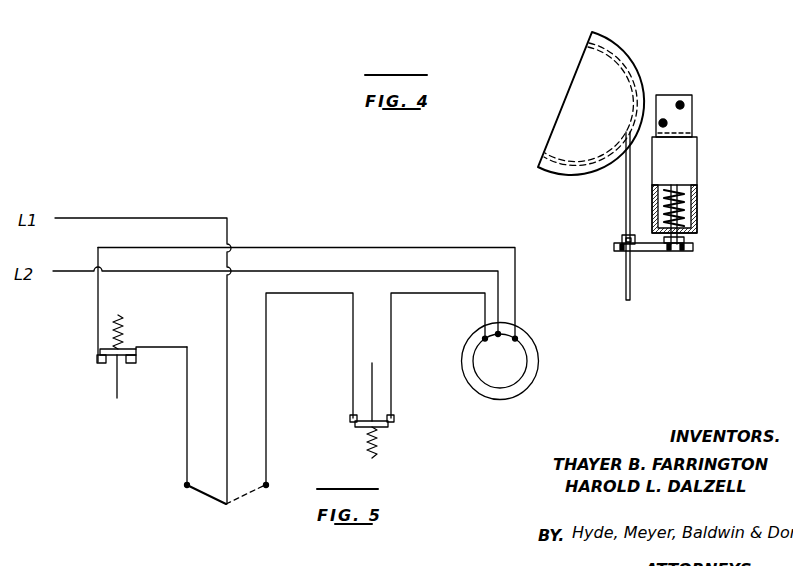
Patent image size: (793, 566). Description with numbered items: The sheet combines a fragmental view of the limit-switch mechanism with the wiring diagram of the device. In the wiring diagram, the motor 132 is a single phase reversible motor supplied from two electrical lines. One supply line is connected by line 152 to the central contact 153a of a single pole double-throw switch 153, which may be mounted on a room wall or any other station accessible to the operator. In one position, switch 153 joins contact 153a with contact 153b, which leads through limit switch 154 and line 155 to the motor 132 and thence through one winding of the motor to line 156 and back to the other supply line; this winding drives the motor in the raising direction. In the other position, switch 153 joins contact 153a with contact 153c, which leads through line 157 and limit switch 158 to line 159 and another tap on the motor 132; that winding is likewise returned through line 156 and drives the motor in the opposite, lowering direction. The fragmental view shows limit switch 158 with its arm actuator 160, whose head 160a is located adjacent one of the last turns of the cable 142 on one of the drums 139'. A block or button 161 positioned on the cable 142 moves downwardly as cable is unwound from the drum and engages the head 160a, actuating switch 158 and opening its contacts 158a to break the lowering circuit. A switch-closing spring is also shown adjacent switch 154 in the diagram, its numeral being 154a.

In FIG. 4, the drum 139' is at (591, 118).
In FIG. 4, the cable 142 is at (626, 218).
In FIG. 4, the limit switch 158 is at (697, 185).
In FIG. 5, the limit switch 158 is at (392, 423).
In FIG. 4, the arm actuator 160 is at (686, 254).
In FIG. 4, the head 160a is at (620, 254).
In FIG. 4, the block or button 161 is at (620, 243).
In FIG. 5, the line 152 is at (162, 212).
In FIG. 5, the line 155 is at (352, 235).
In FIG. 5, the line 156 is at (442, 271).
In FIG. 5, the line 157 is at (323, 298).
In FIG. 5, the line 159 is at (450, 298).
In FIG. 5, the limit switch 154 is at (100, 366).
In FIG. 5, the spring 154a is at (125, 349).
In FIG. 5, the single pole double-throw switch 153 is at (258, 492).
In FIG. 5, the central contact 153a is at (237, 503).
In FIG. 5, the contact 153b is at (187, 485).
In FIG. 5, the contact 153c is at (266, 485).
In FIG. 5, the contacts 158a is at (383, 428).
In FIG. 5, the motor 132 is at (539, 361).